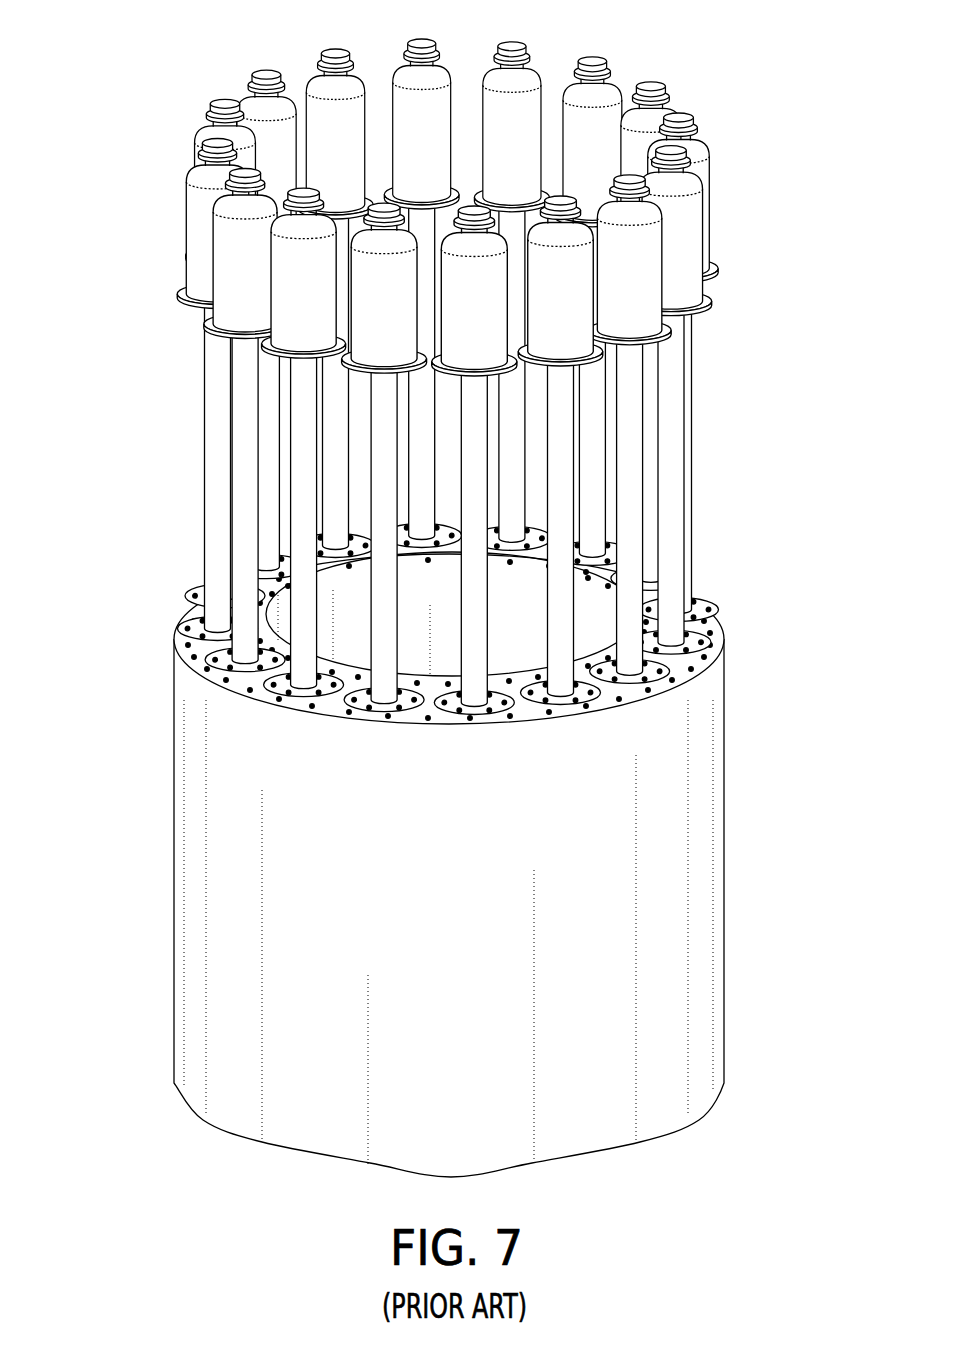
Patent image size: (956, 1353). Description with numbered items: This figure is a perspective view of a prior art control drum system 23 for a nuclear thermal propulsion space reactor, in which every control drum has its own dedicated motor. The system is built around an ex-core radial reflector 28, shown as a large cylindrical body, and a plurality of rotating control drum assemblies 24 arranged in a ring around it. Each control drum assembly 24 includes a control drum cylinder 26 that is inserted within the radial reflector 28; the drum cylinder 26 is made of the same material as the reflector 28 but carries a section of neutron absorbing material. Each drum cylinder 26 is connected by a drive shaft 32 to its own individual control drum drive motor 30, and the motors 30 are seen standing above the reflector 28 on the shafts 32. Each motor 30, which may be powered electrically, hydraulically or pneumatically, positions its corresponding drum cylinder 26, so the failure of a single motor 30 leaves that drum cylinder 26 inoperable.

The control drum system 23 is at (437, 207).
The control drum assembly 24 is at (415, 453).
The control drum cylinder 26 is at (181, 632).
The radial reflector 28 is at (698, 831).
The control drum drive motor 30 is at (197, 220).
The drive shaft 32 is at (213, 511).